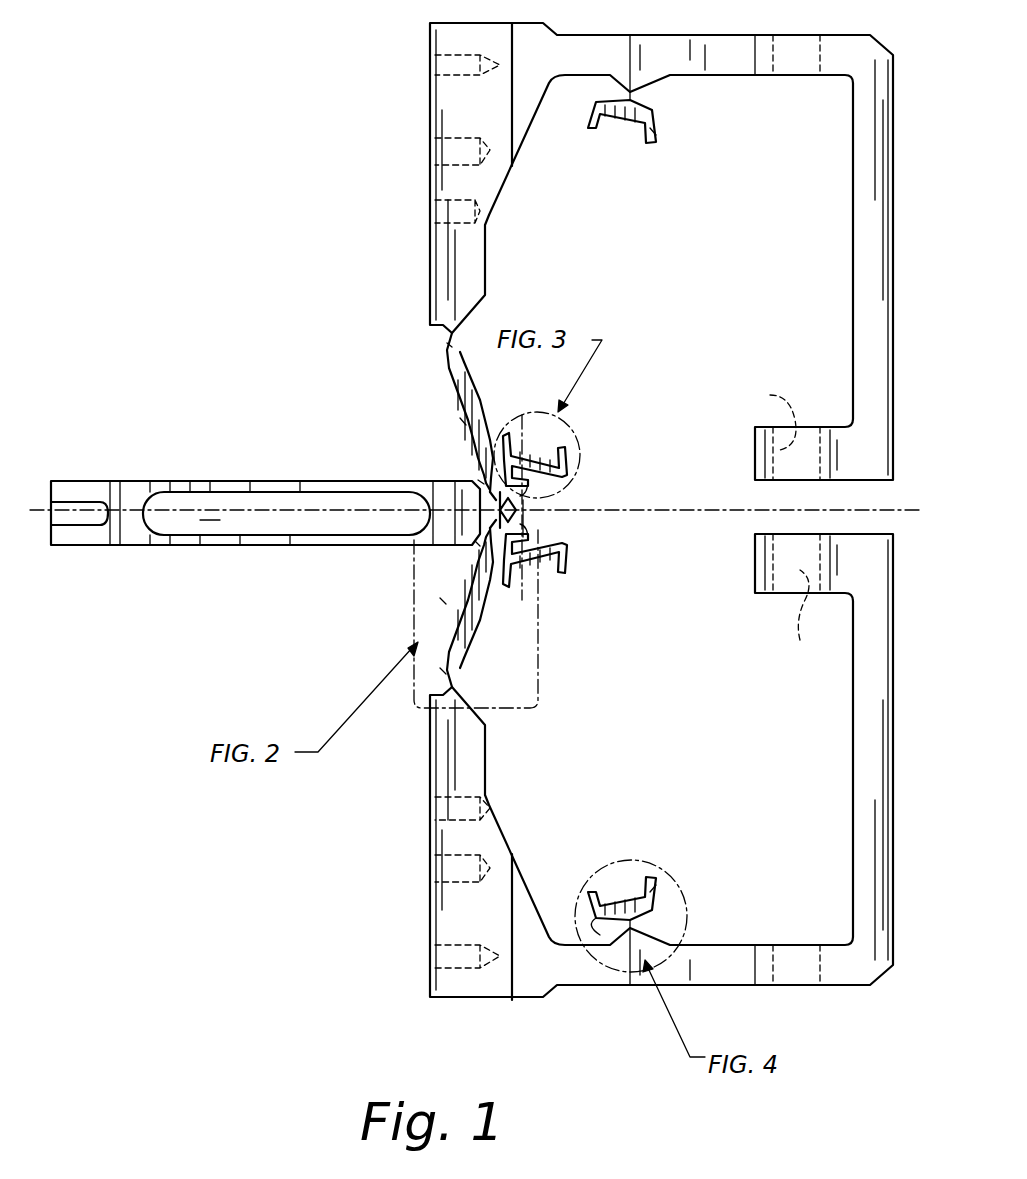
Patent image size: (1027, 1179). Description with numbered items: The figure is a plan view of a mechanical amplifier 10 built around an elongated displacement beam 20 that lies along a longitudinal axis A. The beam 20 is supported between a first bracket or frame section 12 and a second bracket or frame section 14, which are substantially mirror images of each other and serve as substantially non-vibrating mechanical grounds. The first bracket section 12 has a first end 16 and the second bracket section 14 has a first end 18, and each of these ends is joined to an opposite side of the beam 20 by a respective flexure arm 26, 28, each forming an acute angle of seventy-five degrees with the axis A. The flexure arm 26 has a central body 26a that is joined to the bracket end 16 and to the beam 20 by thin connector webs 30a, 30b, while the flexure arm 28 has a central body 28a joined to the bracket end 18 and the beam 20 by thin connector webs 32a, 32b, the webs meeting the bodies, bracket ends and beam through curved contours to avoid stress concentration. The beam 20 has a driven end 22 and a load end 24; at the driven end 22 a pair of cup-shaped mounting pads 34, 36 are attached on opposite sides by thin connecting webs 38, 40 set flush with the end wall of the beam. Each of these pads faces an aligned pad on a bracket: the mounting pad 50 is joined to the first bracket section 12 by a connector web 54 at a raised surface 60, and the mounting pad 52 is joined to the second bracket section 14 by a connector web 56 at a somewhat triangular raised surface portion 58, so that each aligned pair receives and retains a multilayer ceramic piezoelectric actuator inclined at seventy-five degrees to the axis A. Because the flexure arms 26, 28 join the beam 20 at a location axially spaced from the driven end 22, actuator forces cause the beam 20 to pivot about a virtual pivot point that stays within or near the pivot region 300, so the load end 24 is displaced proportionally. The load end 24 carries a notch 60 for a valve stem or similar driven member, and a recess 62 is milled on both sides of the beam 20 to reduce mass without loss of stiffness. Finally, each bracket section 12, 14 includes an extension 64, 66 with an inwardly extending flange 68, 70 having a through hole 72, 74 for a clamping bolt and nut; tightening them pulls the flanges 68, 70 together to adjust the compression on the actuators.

The mechanical amplifier 10 is at (342, 108).
The first bracket or frame section 12 is at (735, 84).
The second bracket or frame section 14 is at (748, 933).
The first end of first bracket section 16 is at (432, 318).
The first end of second bracket section 18 is at (430, 735).
The elongated displacement beam 20 is at (232, 486).
The driven end 22 is at (524, 512).
The load end 24 is at (55, 478).
The flexure arm 26 is at (484, 395).
The central body of flexure arm 26a is at (460, 420).
The flexure arm 28 is at (486, 629).
The central body of flexure arm 28a is at (440, 600).
The connector web 30a is at (447, 345).
The connector web 30b is at (478, 482).
The connector web 32a is at (475, 543).
The connector web 32b is at (440, 670).
The mounting pad 34 is at (569, 461).
The mounting pad 36 is at (569, 551).
The connecting web 38 is at (525, 494).
The connecting web 40 is at (528, 526).
The mounting pad 50 is at (655, 128).
The mounting pad 52 is at (632, 880).
The connector web 54 is at (632, 92).
The connector web 56 is at (659, 895).
The triangular raised surface portion 58 is at (602, 935).
The notch 60 is at (95, 520).
The recess 62 is at (325, 520).
The extension 64 is at (853, 170).
The extension 66 is at (853, 725).
The inwardly extending flange 68 is at (800, 398).
The inwardly extending flange 70 is at (757, 578).
The through hole 72 is at (769, 415).
The through hole 74 is at (801, 615).
The pivot region 300 is at (523, 537).
The longitudinal axis A is at (220, 520).